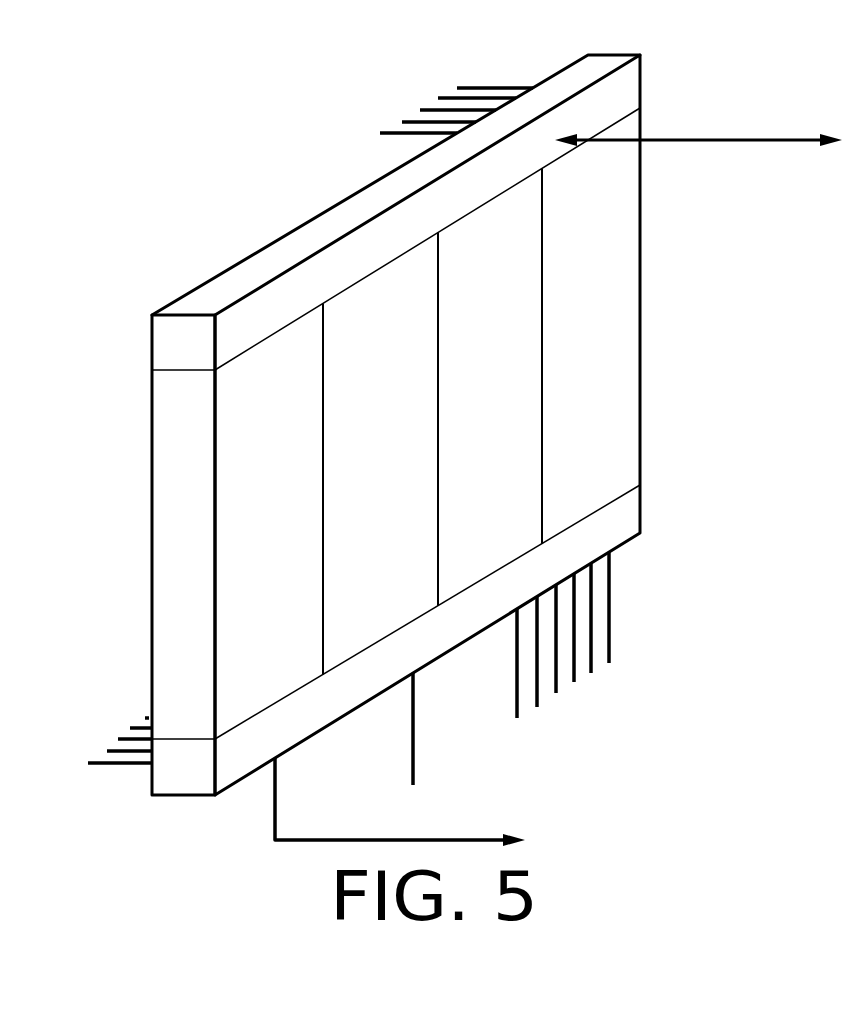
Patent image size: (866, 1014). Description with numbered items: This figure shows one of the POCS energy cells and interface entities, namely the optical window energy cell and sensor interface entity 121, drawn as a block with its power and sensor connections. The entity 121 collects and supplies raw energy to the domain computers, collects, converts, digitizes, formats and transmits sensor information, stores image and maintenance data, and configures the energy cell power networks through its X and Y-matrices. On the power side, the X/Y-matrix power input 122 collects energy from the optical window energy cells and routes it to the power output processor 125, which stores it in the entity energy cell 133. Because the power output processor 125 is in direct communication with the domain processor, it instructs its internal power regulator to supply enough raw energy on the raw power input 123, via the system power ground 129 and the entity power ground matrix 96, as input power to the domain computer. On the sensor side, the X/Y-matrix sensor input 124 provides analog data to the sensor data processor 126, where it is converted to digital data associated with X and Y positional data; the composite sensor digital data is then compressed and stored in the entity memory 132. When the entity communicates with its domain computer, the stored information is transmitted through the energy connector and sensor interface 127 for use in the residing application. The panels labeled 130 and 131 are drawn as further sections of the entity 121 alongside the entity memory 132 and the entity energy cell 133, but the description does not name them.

The entity power ground matrix 96 is at (567, 653).
The optical window energy cell and sensor interface entity 121 is at (155, 408).
The X/Y-matrix power input 122 is at (122, 740).
The raw power input 123 is at (435, 848).
The X/Y-matrix sensor input 124 is at (447, 110).
The power output processor 125 is at (618, 523).
The sensor data processor 126 is at (623, 88).
The energy connector and sensor interface 127 is at (730, 140).
The system power ground 129 is at (417, 708).
The panel section 130 is at (307, 538).
The panel section 131 is at (420, 482).
The entity memory 132 is at (525, 424).
The entity energy cell 133 is at (630, 367).